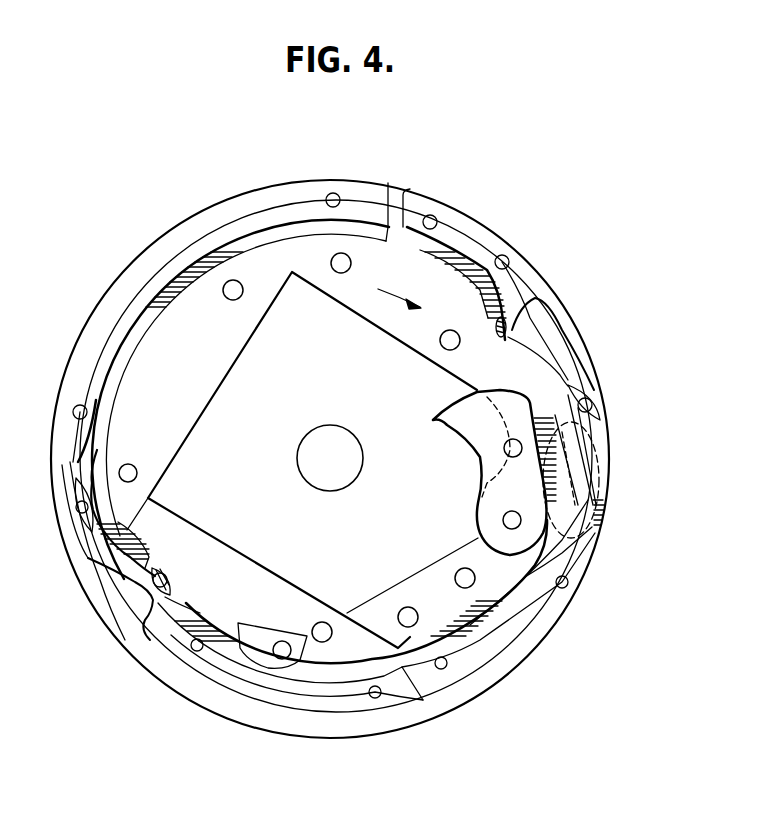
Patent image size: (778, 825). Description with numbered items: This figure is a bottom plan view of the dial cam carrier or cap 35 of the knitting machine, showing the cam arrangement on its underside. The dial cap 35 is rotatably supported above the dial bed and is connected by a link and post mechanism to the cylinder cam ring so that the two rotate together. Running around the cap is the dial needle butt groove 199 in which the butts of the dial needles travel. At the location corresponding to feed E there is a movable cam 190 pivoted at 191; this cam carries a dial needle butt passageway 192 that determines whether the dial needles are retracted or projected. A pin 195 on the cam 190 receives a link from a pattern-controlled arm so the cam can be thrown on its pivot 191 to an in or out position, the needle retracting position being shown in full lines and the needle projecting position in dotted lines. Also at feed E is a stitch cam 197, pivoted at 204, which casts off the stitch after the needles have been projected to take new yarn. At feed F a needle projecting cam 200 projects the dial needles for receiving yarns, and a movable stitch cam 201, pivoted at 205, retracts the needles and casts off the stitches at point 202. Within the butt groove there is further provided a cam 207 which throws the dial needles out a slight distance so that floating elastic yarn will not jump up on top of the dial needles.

The dial cam carrier or cap 35 is at (240, 722).
The movable cam 190 is at (432, 421).
The pivot 191 is at (512, 520).
The dial needle butt passageway 192 is at (541, 436).
The pin 195 is at (513, 448).
The stitch cam 197 is at (512, 332).
The dial needle butt groove 199 is at (230, 248).
The needle projecting cam 200 is at (111, 495).
The movable stitch cam 201 is at (102, 555).
The cast-off point 202 is at (166, 572).
The pivot location of stitch cam 204 is at (590, 400).
The pivot location of movable stitch cam 205 is at (78, 508).
The cam 207 is at (288, 612).